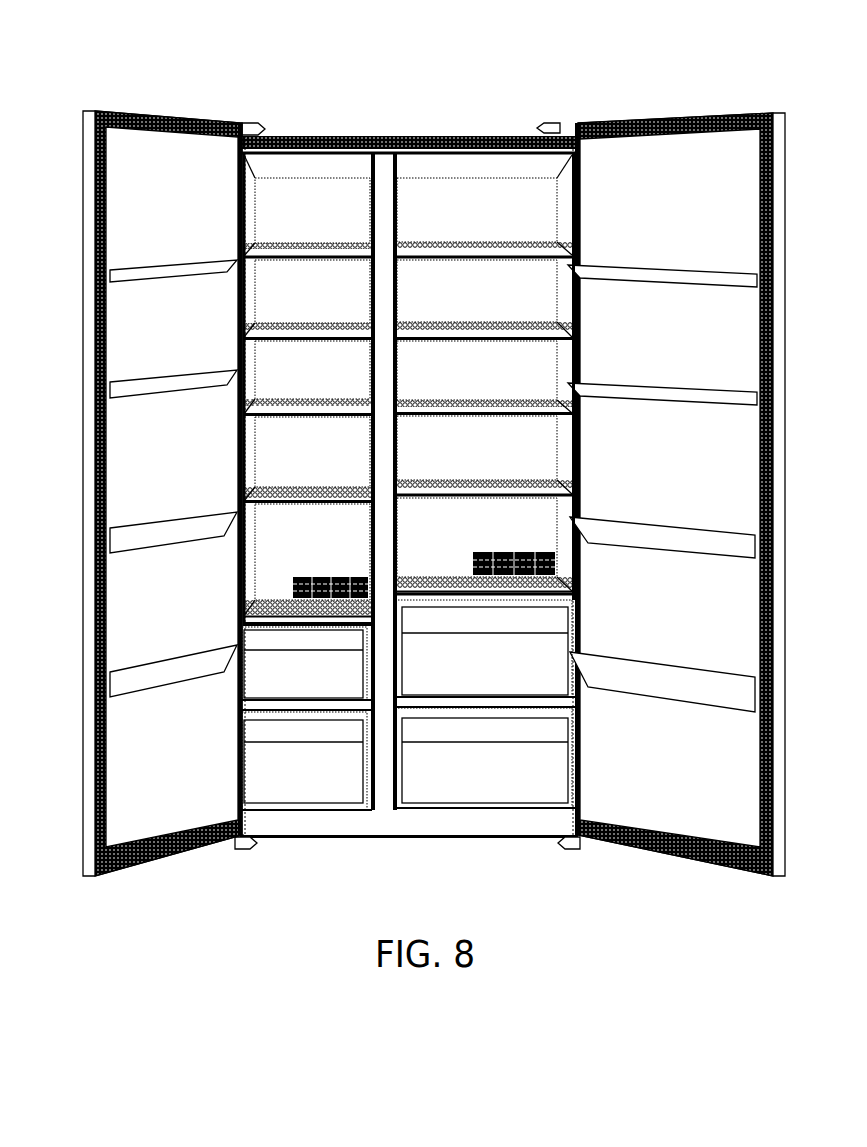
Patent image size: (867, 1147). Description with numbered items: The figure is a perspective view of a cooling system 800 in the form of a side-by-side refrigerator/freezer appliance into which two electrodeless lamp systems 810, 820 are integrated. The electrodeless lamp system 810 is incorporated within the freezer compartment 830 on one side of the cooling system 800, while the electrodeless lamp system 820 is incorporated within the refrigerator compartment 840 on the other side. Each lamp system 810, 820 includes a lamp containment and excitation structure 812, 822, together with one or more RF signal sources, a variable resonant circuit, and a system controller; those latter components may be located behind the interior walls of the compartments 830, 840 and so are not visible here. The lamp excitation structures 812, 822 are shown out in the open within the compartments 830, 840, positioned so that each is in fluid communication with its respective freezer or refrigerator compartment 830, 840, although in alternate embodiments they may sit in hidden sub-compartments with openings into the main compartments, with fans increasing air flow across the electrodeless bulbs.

The cooling system 800 is at (97, 75).
The electrodeless lamp system 810 is at (222, 583).
The electrodeless lamp system 820 is at (602, 582).
The freezer compartment 830 is at (320, 210).
The refrigerator compartment 840 is at (474, 210).
The lamp containment and excitation structure 812 is at (307, 577).
The lamp containment and excitation structure 822 is at (516, 552).